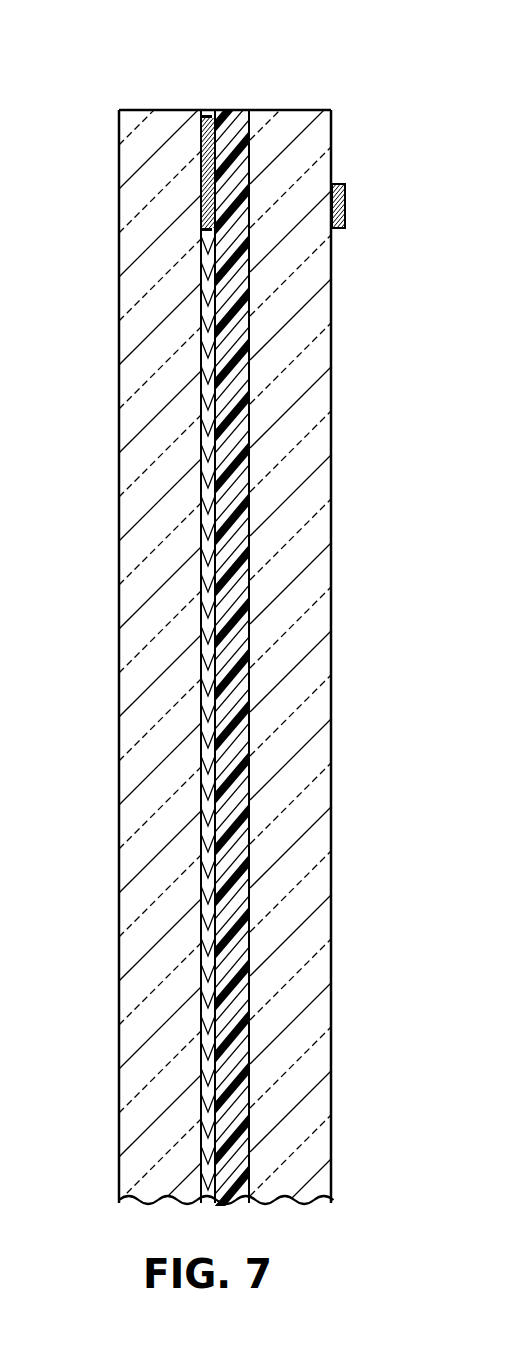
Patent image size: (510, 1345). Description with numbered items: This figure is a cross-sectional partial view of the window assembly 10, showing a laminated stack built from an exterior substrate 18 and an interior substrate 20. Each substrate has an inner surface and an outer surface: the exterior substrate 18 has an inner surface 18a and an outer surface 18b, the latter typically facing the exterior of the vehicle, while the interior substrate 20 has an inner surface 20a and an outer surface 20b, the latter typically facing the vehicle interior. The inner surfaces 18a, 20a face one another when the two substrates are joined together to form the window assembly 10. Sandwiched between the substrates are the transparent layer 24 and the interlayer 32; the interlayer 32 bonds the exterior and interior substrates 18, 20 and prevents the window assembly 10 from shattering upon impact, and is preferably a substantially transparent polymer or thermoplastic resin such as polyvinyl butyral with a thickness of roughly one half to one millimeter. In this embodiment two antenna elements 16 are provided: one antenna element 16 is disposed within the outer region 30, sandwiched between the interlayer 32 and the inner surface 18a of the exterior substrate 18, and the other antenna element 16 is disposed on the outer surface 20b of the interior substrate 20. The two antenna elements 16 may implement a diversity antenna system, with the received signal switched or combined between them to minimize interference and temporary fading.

The window assembly 10 is at (282, 101).
The antenna element 16 is at (345, 202).
The exterior substrate 18 is at (138, 407).
The inner surface of the exterior substrate 18a is at (207, 110).
The outer surface of the exterior substrate 18b is at (119, 125).
The interior substrate 20 is at (323, 389).
The inner surface of the interior substrate 20a is at (248, 114).
The outer surface of the interior substrate 20b is at (332, 117).
The transparent layer 24 is at (207, 711).
The outer region 30 is at (201, 233).
The interlayer 32 is at (232, 863).